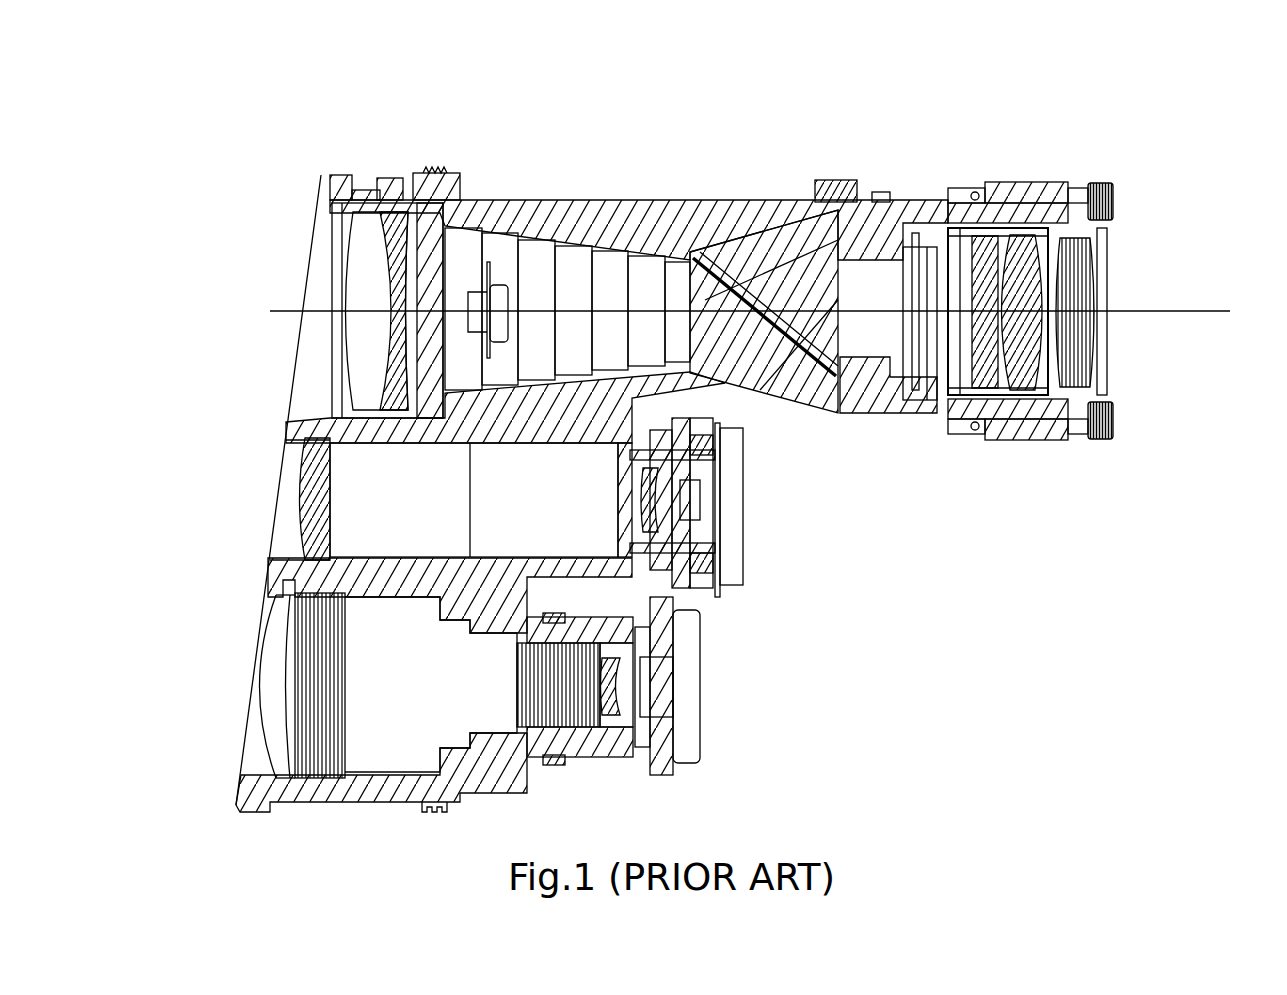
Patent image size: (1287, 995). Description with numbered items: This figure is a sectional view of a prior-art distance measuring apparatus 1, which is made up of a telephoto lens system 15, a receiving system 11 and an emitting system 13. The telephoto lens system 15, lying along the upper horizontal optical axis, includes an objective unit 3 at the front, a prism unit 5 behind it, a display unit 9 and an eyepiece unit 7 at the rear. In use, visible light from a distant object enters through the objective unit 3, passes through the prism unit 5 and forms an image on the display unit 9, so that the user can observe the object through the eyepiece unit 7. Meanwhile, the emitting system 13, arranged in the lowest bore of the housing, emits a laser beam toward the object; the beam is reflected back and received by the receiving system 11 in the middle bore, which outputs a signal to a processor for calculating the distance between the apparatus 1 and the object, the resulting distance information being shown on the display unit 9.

The distance measuring apparatus 1 is at (104, 101).
The objective unit 3 is at (367, 287).
The prism unit 5 is at (748, 250).
The eyepiece unit 7 is at (1067, 207).
The display unit 9 is at (880, 225).
The receiving system 11 is at (417, 500).
The emitting system 13 is at (393, 698).
The telephoto lens system 15 is at (920, 68).